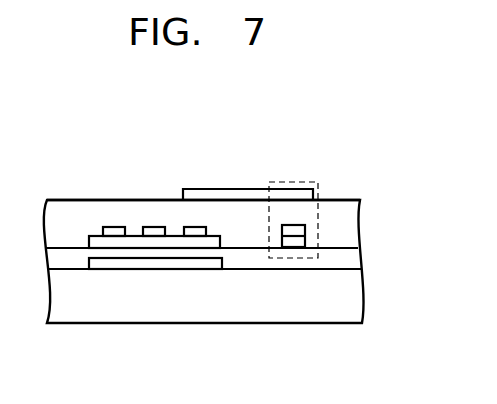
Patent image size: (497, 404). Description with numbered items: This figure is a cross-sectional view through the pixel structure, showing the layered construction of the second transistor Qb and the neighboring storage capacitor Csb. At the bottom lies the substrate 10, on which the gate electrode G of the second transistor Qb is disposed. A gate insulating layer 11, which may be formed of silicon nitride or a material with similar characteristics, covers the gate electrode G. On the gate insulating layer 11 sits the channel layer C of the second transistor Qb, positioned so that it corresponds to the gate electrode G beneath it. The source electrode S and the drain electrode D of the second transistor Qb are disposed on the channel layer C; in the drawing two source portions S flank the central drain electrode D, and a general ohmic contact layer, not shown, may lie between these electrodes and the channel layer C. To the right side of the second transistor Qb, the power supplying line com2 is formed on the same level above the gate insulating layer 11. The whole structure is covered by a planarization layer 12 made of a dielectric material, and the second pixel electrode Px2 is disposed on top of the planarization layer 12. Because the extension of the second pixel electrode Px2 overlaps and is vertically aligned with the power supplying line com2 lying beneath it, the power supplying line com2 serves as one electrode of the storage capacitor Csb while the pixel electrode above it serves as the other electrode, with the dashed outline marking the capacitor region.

The substrate 10 is at (362, 300).
The gate insulating layer 11 is at (357, 258).
The planarization layer 12 is at (355, 226).
The channel layer C is at (119, 243).
The gate electrode G is at (165, 264).
The source electrode S is at (116, 227).
The drain electrode D is at (156, 227).
The second transistor Qb is at (192, 151).
The second pixel electrode Px2 is at (238, 189).
The storage capacitor Csb is at (327, 194).
The power supplying line com2 is at (313, 235).